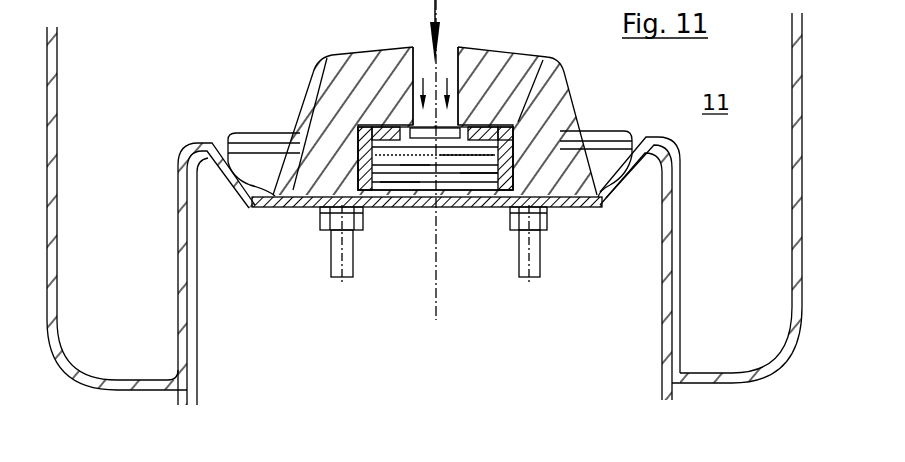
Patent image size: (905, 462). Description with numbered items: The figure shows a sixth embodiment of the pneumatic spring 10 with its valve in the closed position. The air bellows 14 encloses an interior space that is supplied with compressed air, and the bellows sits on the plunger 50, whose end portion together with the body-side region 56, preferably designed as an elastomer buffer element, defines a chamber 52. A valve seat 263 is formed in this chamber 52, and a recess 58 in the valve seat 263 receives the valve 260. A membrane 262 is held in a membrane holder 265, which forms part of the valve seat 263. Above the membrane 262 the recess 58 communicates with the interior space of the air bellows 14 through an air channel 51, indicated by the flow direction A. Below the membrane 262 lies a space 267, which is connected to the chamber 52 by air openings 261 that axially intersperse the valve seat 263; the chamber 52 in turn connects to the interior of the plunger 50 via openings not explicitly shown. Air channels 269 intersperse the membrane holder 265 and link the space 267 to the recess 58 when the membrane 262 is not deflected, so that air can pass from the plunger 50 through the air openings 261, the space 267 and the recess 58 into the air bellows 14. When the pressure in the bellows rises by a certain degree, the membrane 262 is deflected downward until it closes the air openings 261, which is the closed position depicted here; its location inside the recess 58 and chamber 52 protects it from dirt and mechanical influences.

The pneumatic spring 10 is at (150, 413).
The air bellows 14 is at (792, 97).
The plunger 50 is at (663, 317).
The air channel 51 is at (422, 67).
The chamber 52 is at (325, 197).
The body-side region 56 is at (540, 122).
The recess 58 is at (528, 76).
The flow direction A is at (447, 20).
The valve 260 is at (352, 152).
The air openings 261 is at (416, 176).
The membrane 262 is at (476, 172).
The valve seat 263 is at (512, 197).
The membrane holder 265 is at (490, 182).
The space 267 is at (400, 190).
The air channels 269 is at (513, 187).